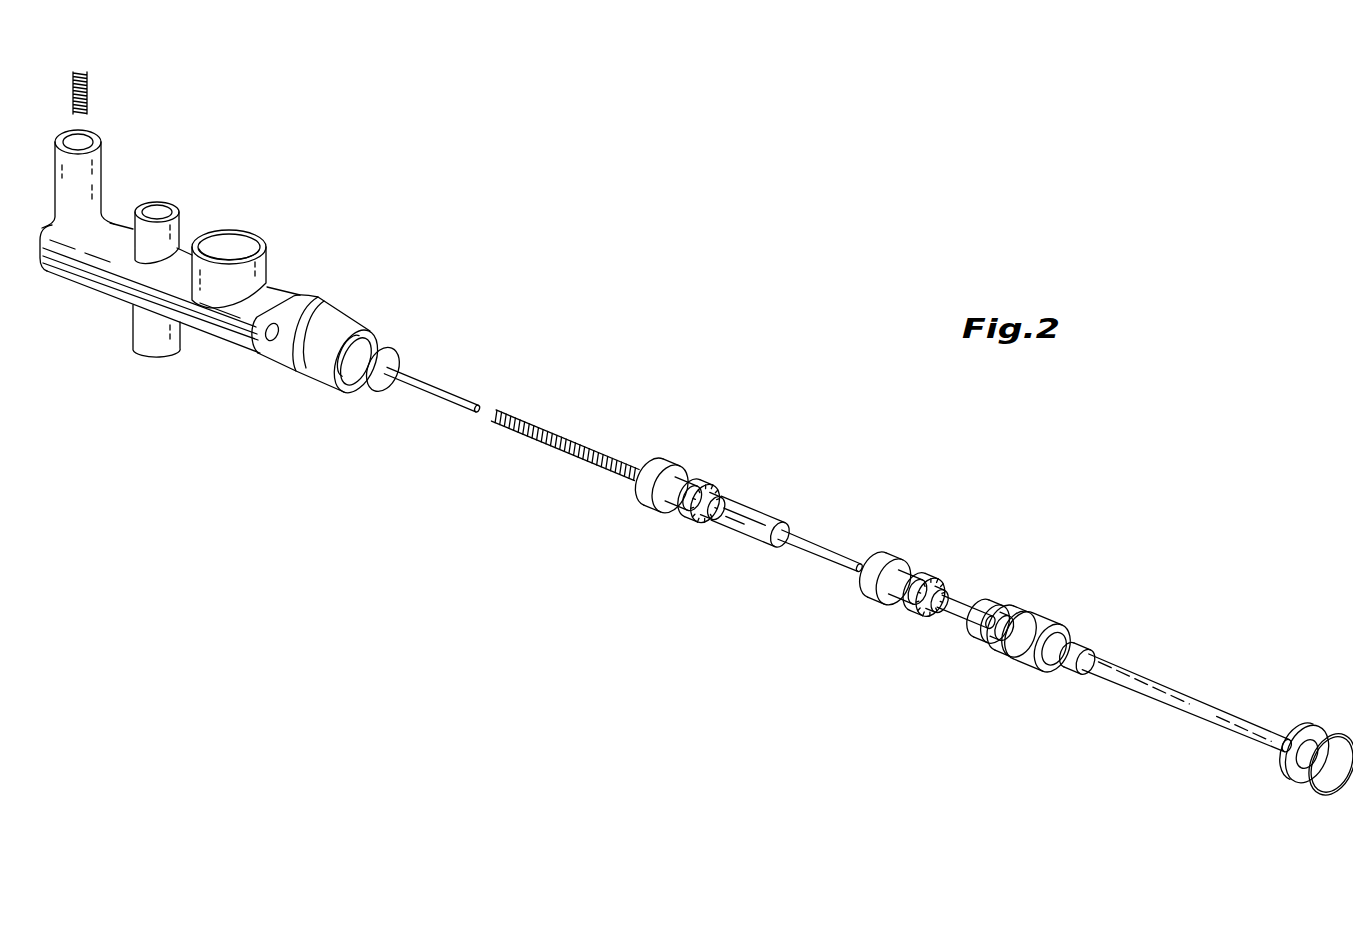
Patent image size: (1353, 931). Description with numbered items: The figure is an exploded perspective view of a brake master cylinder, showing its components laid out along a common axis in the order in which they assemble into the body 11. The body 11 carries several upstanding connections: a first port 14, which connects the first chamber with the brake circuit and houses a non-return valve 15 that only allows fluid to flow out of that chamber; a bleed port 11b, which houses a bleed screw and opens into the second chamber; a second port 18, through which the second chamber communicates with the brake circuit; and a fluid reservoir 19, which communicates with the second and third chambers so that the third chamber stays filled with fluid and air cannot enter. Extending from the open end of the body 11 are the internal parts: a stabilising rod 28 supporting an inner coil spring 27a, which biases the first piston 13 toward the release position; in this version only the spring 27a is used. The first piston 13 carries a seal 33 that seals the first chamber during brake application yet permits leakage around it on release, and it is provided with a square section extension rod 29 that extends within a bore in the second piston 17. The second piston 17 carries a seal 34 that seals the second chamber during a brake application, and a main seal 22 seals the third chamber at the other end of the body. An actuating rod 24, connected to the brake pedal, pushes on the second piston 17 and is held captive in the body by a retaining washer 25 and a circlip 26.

The body 11 is at (85, 290).
The bleed port 11b is at (162, 212).
The first piston 13 is at (755, 510).
The first port 14 is at (102, 162).
The non-return valve 15 is at (87, 92).
The second piston 17 is at (960, 617).
The second port 18 is at (157, 357).
The fluid reservoir 19 is at (237, 242).
The main seal 22 is at (1042, 617).
The actuating rod 24 is at (1177, 695).
The retaining washer 25 is at (1317, 723).
The circlip 26 is at (1318, 797).
The inner coil spring 27a is at (555, 428).
The stabilising rod 28 is at (432, 387).
The square section extension rod 29 is at (817, 547).
The seal 33 is at (657, 503).
The seal 34 is at (897, 553).